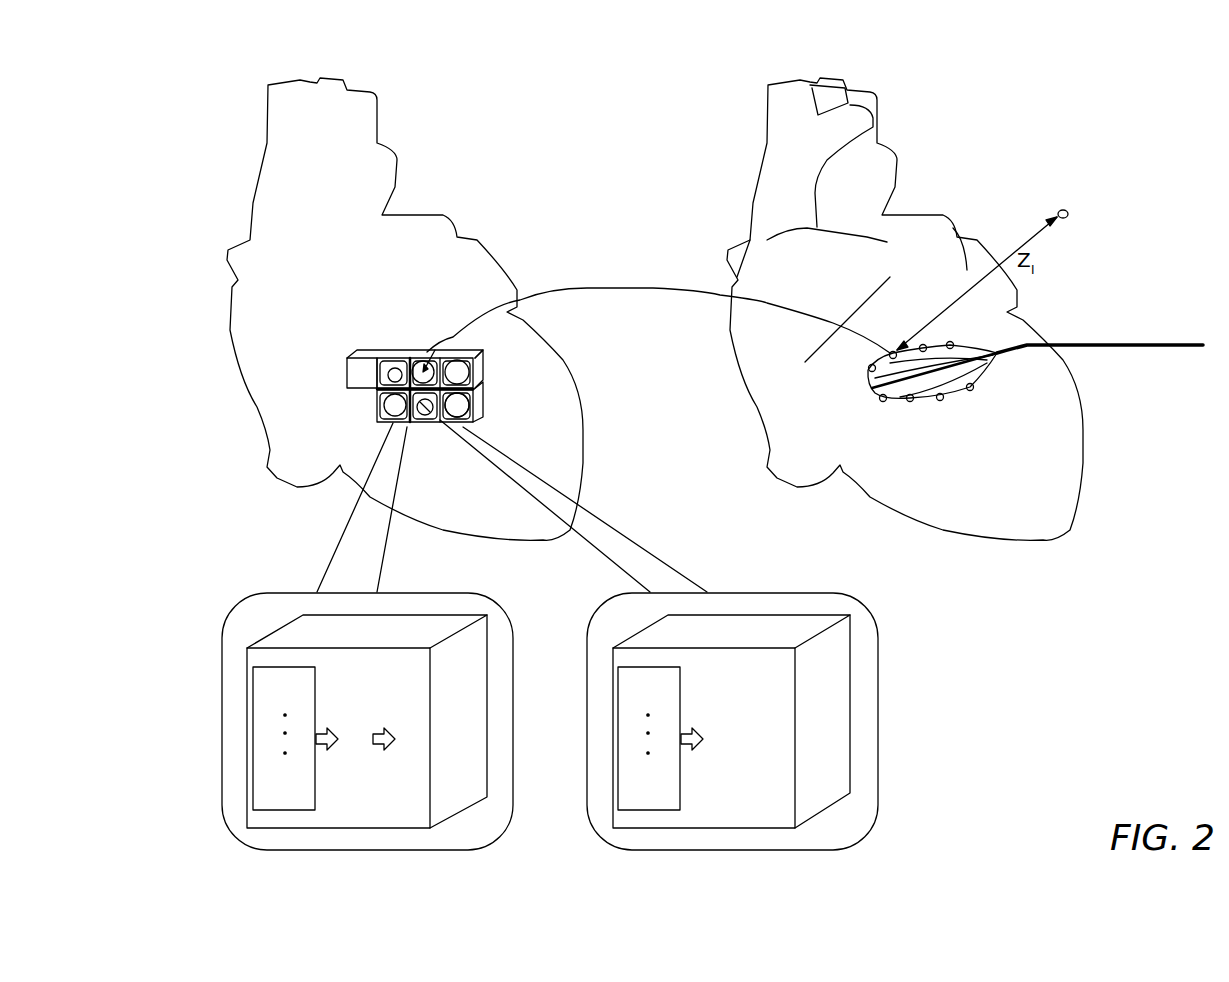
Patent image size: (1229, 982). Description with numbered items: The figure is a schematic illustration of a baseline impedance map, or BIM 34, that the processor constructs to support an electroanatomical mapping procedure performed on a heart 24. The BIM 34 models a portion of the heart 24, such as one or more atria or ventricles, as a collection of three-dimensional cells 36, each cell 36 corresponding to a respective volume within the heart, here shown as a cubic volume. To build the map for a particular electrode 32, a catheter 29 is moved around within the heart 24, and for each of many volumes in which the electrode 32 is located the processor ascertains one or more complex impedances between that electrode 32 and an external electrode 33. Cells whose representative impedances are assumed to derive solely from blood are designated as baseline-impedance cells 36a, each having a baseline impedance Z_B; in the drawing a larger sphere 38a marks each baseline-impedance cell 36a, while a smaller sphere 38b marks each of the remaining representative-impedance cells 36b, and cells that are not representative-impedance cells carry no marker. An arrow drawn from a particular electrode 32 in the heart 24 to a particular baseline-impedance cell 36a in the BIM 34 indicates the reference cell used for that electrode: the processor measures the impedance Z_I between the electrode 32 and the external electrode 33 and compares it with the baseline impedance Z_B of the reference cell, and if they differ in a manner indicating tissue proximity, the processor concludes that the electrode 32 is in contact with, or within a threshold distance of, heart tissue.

The heart 24 is at (953, 228).
The catheter 29 is at (1155, 345).
The electrode 32 is at (913, 407).
The external electrode 33 is at (1068, 213).
The baseline impedance map 34 is at (487, 217).
The three-dimensional cells 36 is at (480, 367).
The baseline-impedance cells 36a is at (277, 635).
The representative-impedance cells 36b is at (640, 632).
The larger sphere 38a is at (453, 403).
The smaller sphere 38b is at (417, 410).